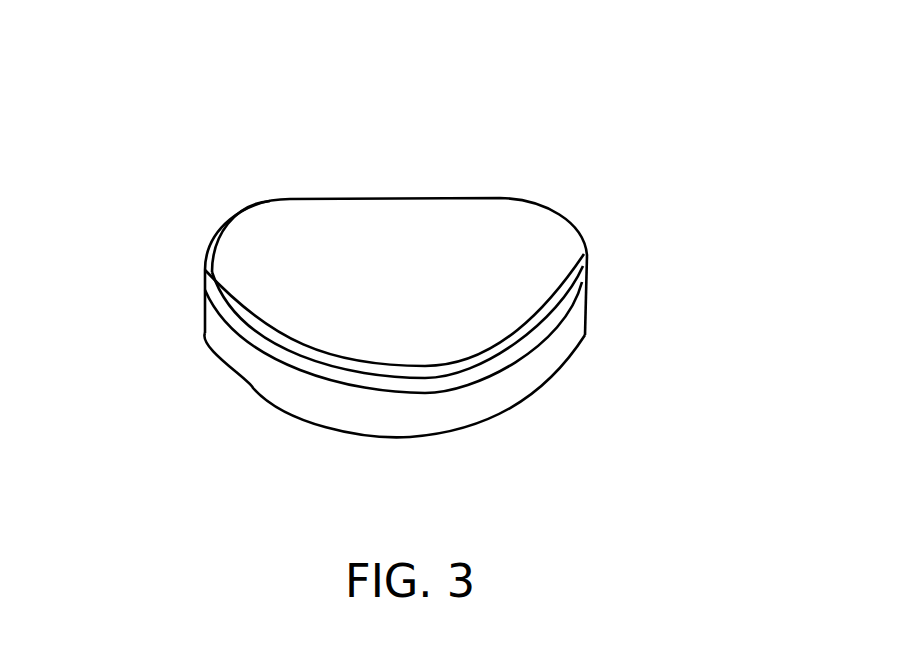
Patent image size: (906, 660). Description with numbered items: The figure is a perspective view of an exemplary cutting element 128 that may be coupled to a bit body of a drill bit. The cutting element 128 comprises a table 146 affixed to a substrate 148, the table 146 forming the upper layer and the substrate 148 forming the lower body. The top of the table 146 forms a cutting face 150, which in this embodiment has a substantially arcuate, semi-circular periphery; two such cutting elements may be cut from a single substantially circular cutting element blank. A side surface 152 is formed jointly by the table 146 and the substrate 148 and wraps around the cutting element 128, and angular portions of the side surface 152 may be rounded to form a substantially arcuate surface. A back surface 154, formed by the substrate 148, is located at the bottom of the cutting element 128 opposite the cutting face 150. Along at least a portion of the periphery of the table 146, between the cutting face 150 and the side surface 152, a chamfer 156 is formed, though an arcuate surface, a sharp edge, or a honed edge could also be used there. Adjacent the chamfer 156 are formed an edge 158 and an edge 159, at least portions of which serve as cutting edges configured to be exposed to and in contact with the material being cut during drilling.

The cutting element 128 is at (623, 174).
The cutting face 150 is at (333, 237).
The edge 158 is at (203, 270).
The chamfer 156 is at (553, 312).
The edge 159 is at (217, 315).
The table 146 is at (535, 342).
The side surface 152 is at (233, 355).
The substrate 148 is at (522, 380).
The back surface 154 is at (287, 418).